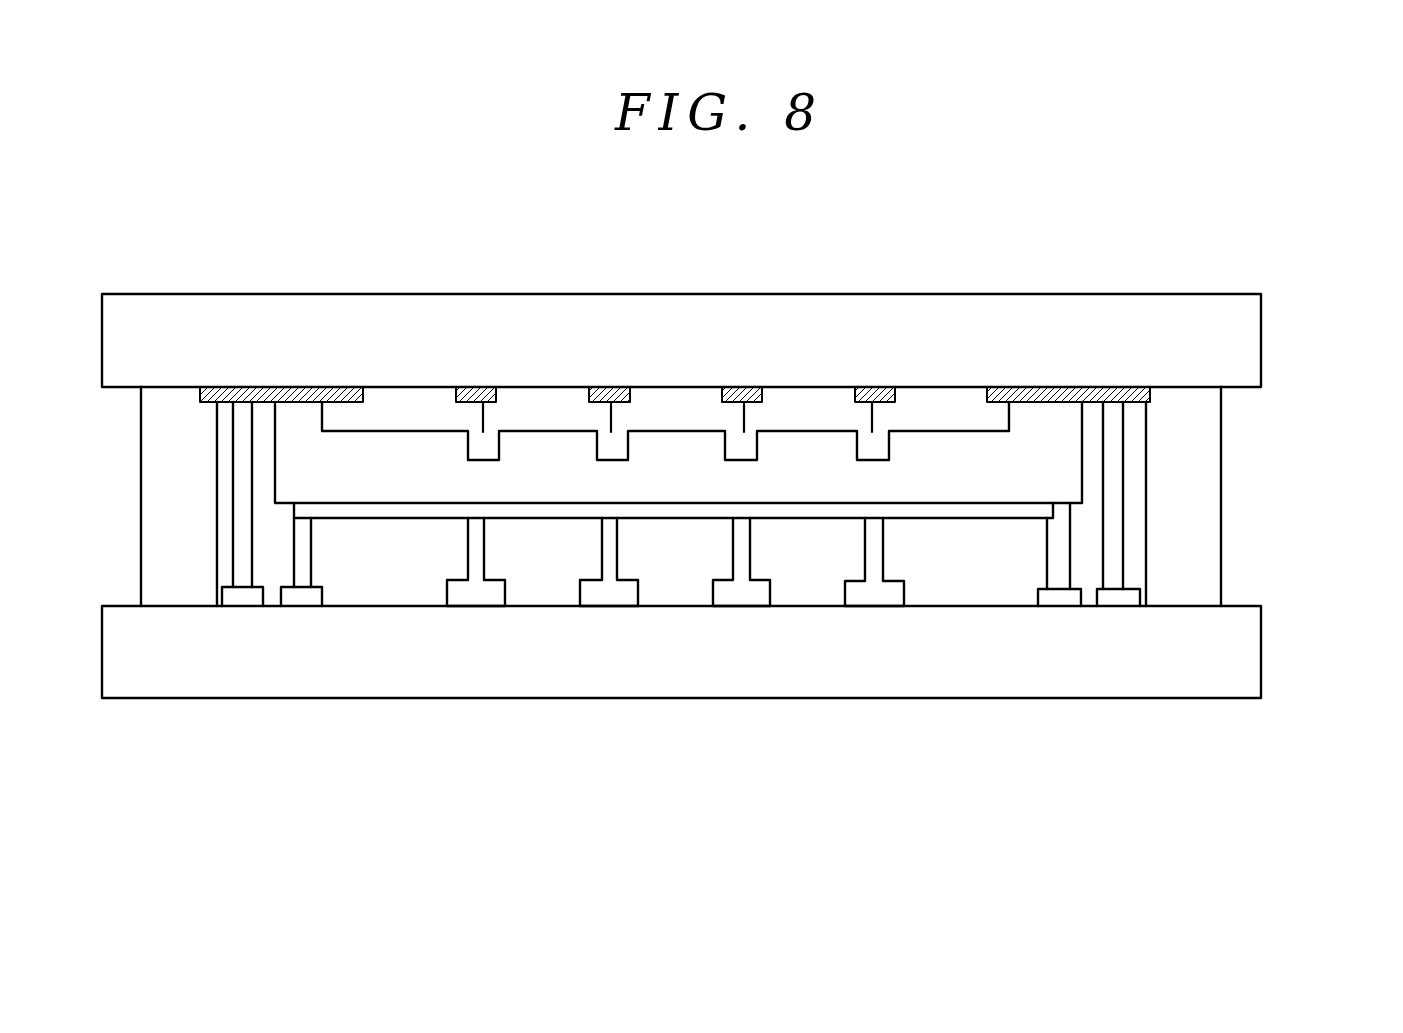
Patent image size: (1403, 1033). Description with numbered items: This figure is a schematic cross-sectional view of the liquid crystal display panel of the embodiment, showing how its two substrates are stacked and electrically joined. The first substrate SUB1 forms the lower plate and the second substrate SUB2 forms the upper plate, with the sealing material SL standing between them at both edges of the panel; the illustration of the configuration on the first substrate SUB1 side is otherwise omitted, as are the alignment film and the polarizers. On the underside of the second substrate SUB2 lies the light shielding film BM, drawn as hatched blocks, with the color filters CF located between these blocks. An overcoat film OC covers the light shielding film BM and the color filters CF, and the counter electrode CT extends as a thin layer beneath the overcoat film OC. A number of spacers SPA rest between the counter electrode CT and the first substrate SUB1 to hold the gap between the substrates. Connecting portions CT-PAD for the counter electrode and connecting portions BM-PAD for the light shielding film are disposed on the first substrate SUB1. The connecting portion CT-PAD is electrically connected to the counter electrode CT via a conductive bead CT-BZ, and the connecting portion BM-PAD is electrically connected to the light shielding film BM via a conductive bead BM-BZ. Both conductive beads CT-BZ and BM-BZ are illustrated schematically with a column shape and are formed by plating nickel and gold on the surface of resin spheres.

The second substrate SUB2 is at (1247, 343).
The first substrate SUB1 is at (1241, 653).
The sealing material SL is at (1210, 437).
The light shielding film BM is at (878, 386).
The color filter CF is at (432, 395).
The overcoat film OC is at (1060, 435).
The counter electrode CT is at (912, 513).
The spacer SPA is at (741, 572).
The conductive bead for counter electrode CT-BZ is at (1052, 547).
The connecting portion for counter electrode CT-PAD is at (1058, 600).
The conductive bead for light shielding film BM-BZ is at (1117, 540).
The connecting portion for light shielding film BM-PAD is at (1118, 600).